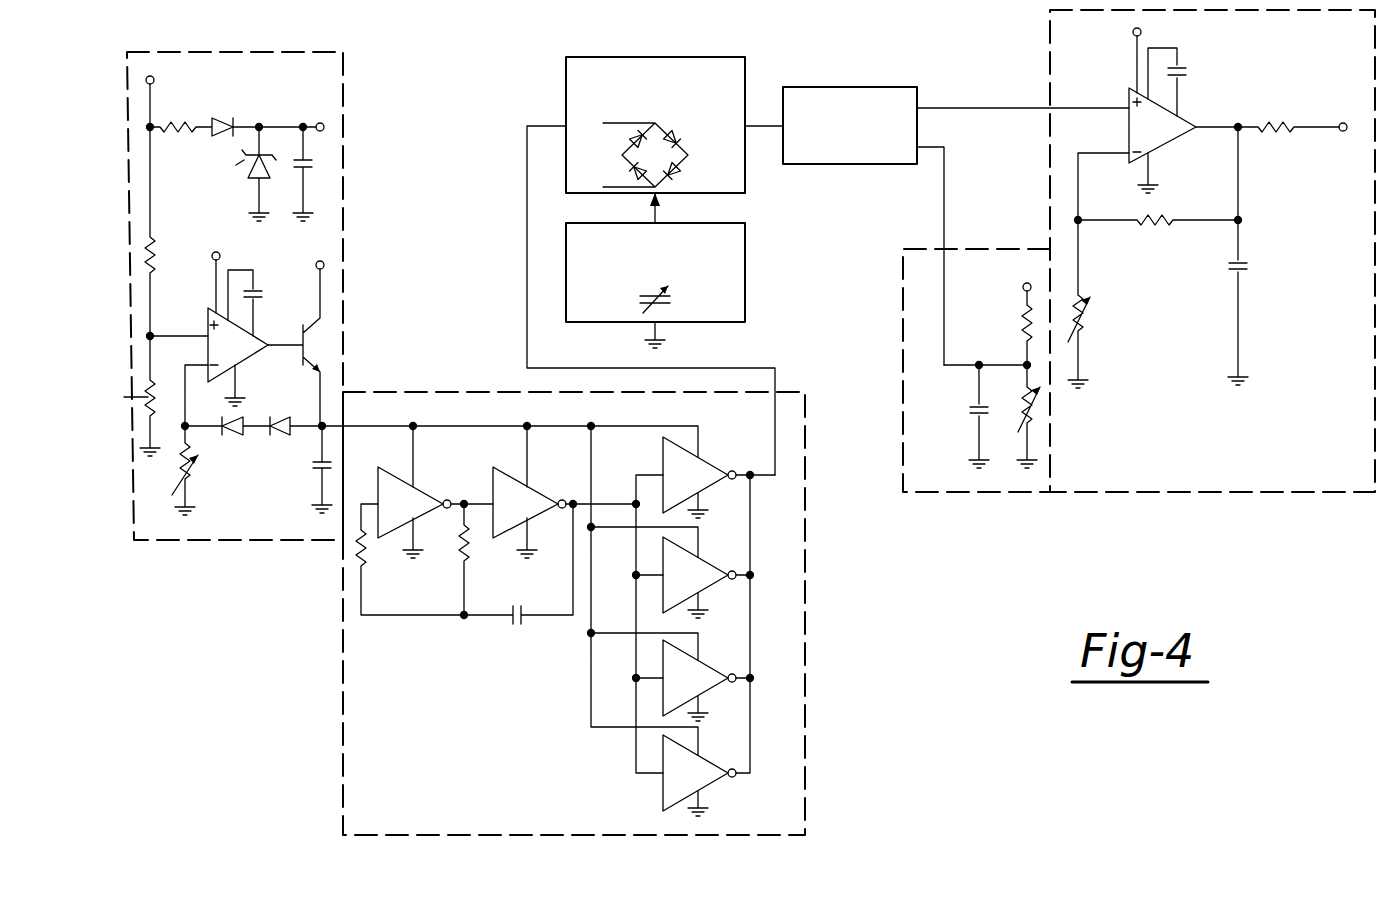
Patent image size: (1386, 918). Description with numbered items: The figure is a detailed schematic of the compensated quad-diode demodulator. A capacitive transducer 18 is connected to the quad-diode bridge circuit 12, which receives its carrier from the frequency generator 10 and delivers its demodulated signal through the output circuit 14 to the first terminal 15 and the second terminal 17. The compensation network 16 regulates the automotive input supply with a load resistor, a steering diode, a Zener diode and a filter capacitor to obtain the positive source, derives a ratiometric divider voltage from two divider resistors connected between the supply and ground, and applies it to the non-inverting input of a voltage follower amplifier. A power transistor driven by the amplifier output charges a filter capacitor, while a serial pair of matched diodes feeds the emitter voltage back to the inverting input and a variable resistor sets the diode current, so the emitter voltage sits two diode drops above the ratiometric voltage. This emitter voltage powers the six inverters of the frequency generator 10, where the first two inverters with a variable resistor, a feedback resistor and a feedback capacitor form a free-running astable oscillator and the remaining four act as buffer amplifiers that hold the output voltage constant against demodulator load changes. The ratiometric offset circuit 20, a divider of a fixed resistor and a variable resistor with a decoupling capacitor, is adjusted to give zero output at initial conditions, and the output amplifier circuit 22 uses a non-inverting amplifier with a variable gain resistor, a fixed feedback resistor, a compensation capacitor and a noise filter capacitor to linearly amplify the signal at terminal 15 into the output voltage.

The frequency generator 10 is at (343, 692).
The quad-diode bridge circuit 12 is at (633, 57).
The output circuit 14 is at (815, 87).
The terminal 15 is at (955, 108).
The compensation network 16 is at (236, 540).
The terminal 17 is at (945, 183).
The capacitive transducer 18 is at (745, 297).
The ratiometric offset circuit 20 is at (915, 492).
The output amplifier circuit 22 is at (1170, 492).